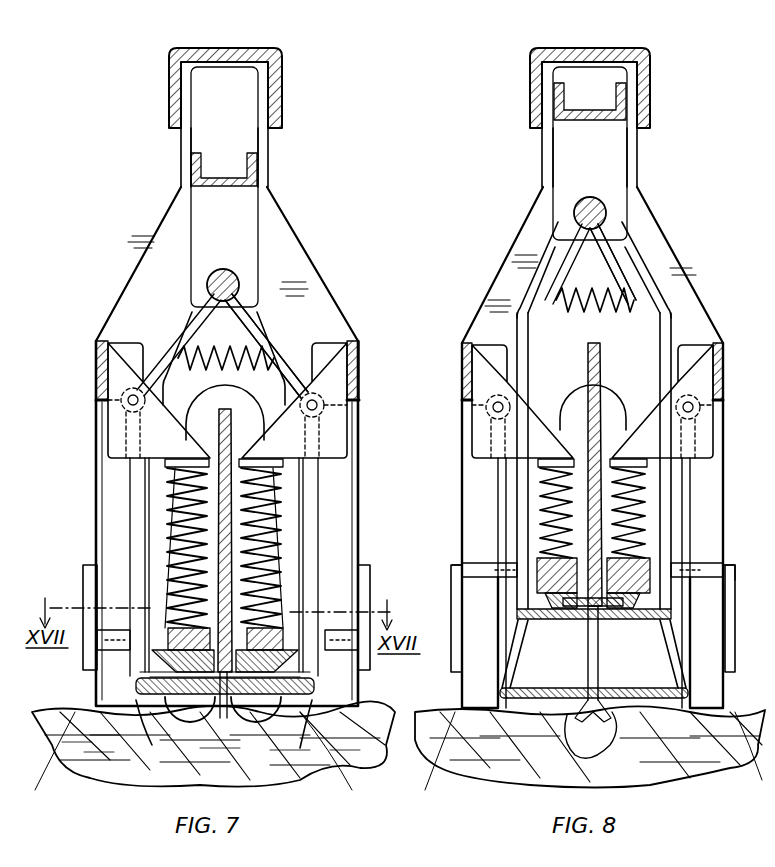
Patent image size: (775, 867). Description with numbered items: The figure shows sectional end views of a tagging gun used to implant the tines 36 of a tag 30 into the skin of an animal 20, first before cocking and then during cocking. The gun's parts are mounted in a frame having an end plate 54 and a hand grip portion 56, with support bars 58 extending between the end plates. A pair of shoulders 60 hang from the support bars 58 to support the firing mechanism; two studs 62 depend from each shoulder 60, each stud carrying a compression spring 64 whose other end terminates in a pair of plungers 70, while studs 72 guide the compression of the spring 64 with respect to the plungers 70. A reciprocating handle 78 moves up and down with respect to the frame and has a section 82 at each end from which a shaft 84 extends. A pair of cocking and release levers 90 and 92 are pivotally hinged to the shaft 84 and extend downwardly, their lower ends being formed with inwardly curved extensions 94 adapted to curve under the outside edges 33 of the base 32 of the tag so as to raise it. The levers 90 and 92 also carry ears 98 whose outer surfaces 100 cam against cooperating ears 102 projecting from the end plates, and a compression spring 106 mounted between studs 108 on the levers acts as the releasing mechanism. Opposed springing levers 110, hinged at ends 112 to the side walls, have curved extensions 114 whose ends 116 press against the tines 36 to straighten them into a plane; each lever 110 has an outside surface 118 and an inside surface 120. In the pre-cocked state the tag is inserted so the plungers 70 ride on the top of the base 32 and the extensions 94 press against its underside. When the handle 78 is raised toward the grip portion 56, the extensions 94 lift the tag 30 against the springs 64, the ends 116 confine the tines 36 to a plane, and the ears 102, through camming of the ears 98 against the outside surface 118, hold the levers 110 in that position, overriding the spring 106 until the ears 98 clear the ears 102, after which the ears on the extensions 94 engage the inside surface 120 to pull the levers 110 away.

In FIG. 7, the animal 20 is at (168, 744).
In FIG. 8, the animal 20 is at (684, 776).
In FIG. 7, the tag 30 is at (246, 412).
In FIG. 8, the tag 30 is at (614, 356).
In FIG. 7, the base 32 is at (300, 668).
In FIG. 8, the outside edges 33 is at (530, 608).
In FIG. 7, the tines 36 is at (237, 706).
In FIG. 8, the tines 36 is at (580, 667).
In FIG. 7, the end plate 54 is at (318, 278).
In FIG. 8, the end plate 54 is at (526, 232).
In FIG. 7, the hand grip portion 56 is at (169, 62).
In FIG. 8, the hand grip portion 56 is at (532, 58).
In FIG. 7, the support bars 58 is at (94, 352).
In FIG. 8, the support bars 58 is at (466, 392).
In FIG. 7, the shoulders 60 is at (120, 432).
In FIG. 8, the shoulders 60 is at (592, 401).
In FIG. 7, the studs 62 is at (172, 470).
In FIG. 7, the compression spring 64 is at (180, 514).
In FIG. 8, the compression spring 64 is at (548, 474).
In FIG. 7, the plungers 70 is at (258, 640).
In FIG. 7, the studs 72 is at (180, 596).
In FIG. 8, the studs 72 is at (593, 583).
In FIG. 7, the handle 78 is at (226, 152).
In FIG. 8, the handle 78 is at (586, 130).
In FIG. 7, the section 82 is at (230, 228).
In FIG. 8, the section 82 is at (600, 192).
In FIG. 7, the shaft 84 is at (238, 282).
In FIG. 8, the shaft 84 is at (606, 210).
In FIG. 7, the cocking and release lever 90 is at (262, 332).
In FIG. 8, the cocking and release lever 90 is at (642, 264).
In FIG. 7, the cocking and release lever 92 is at (206, 324).
In FIG. 8, the cocking and release lever 92 is at (535, 285).
In FIG. 8, the inwardly curved extensions 94 is at (540, 630).
In FIG. 7, the ears 98 is at (110, 650).
In FIG. 8, the ears 98 is at (474, 558).
In FIG. 8, the outer surfaces 100 is at (752, 556).
In FIG. 7, the ears 102 is at (84, 574).
In FIG. 8, the ears 102 is at (452, 588).
In FIG. 7, the compression spring 106 is at (226, 344).
In FIG. 8, the compression spring 106 is at (600, 306).
In FIG. 7, the studs 108 is at (196, 362).
In FIG. 8, the studs 108 is at (652, 296).
In FIG. 7, the levers 110 is at (136, 496).
In FIG. 8, the levers 110 is at (500, 478).
In FIG. 7, the ends 112 is at (112, 404).
In FIG. 8, the ends 112 is at (592, 426).
In FIG. 7, the curved extensions 114 is at (115, 770).
In FIG. 8, the curved extensions 114 is at (480, 770).
In FIG. 8, the ends 116 is at (612, 740).
In FIG. 8, the outside surface 118 is at (515, 502).
In FIG. 8, the inside surface 120 is at (516, 636).